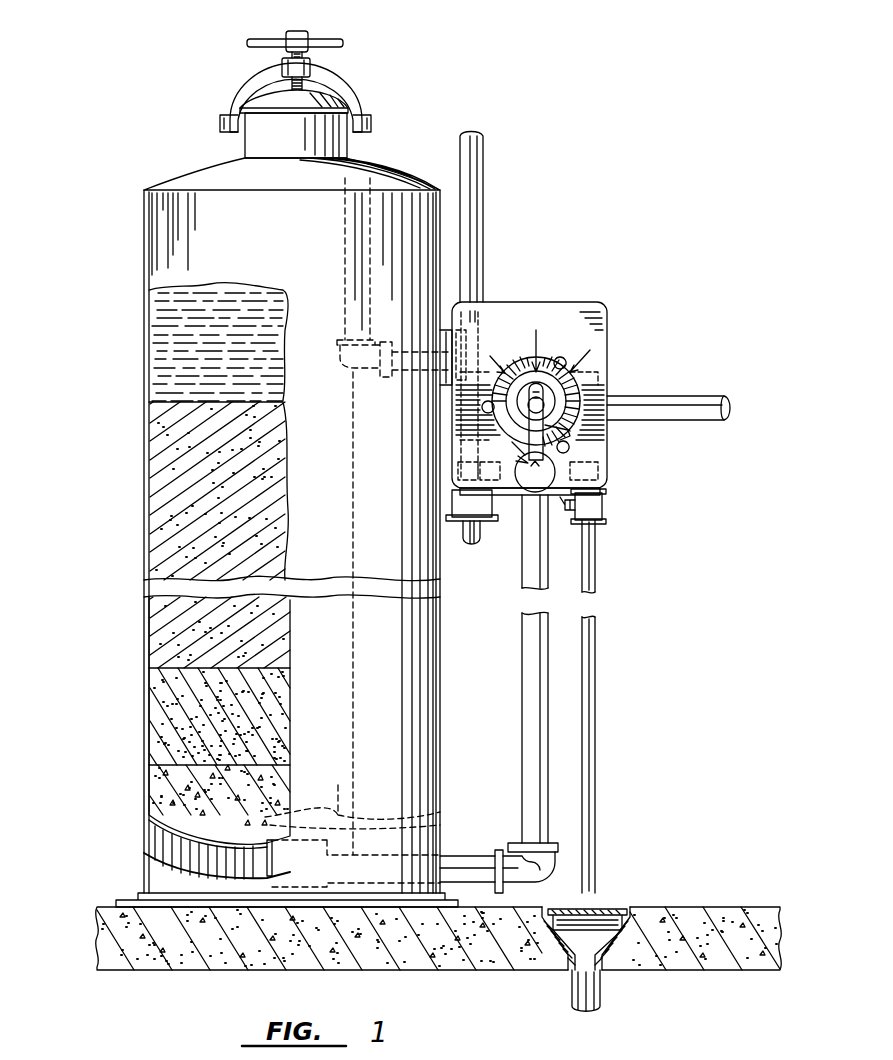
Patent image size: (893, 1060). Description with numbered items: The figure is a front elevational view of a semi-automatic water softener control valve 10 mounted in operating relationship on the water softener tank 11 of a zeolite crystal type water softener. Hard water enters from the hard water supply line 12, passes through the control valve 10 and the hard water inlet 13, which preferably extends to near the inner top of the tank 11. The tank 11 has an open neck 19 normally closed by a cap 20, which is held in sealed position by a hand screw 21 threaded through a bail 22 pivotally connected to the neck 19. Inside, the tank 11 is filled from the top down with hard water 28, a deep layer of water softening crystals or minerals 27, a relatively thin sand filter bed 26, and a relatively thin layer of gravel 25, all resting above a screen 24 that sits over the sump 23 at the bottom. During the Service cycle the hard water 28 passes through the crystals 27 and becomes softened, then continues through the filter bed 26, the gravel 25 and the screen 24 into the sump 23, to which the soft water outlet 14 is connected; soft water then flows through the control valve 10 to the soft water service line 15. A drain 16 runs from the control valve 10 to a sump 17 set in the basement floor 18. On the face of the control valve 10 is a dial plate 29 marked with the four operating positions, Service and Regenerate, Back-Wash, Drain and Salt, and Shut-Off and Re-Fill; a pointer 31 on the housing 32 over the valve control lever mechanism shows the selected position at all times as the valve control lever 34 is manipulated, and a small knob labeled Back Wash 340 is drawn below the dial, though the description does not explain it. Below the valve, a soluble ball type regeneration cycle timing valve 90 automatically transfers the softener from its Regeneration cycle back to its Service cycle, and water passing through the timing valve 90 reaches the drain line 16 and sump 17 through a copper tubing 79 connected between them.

The semi-automatic control valve 10 is at (587, 395).
The water softener tank 11 is at (152, 237).
The hard water supply line 12 is at (687, 405).
The hard water inlet 13 is at (343, 265).
The soft water outlet 14 is at (525, 617).
The soft water service line 15 is at (475, 197).
The drain 16 is at (595, 620).
The sump 17 is at (597, 908).
The basement floor 18 is at (680, 920).
The neck 19 is at (325, 147).
The cap 20 is at (330, 98).
The hand screw 21 is at (330, 40).
The bail 22 is at (257, 78).
The sump 23 is at (266, 858).
The screen 24 is at (267, 817).
The layer of gravel 25 is at (158, 782).
The sand filter bed 26 is at (162, 693).
The water softening crystals 27 is at (155, 420).
The hard water 28 is at (149, 300).
The dial plate 29 is at (603, 327).
The pointer 31 is at (537, 368).
The housing 32 is at (565, 427).
The valve control lever 34 is at (518, 458).
The backwash knob 340 is at (550, 466).
The copper tubing 79 is at (563, 512).
The regeneration cycle timing valve 90 is at (465, 505).